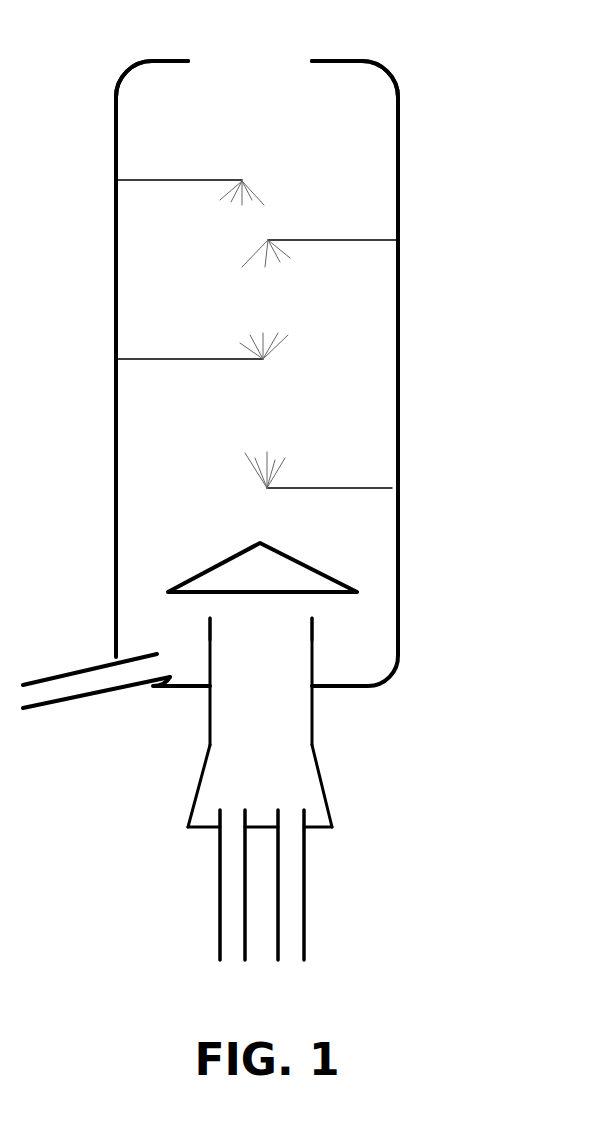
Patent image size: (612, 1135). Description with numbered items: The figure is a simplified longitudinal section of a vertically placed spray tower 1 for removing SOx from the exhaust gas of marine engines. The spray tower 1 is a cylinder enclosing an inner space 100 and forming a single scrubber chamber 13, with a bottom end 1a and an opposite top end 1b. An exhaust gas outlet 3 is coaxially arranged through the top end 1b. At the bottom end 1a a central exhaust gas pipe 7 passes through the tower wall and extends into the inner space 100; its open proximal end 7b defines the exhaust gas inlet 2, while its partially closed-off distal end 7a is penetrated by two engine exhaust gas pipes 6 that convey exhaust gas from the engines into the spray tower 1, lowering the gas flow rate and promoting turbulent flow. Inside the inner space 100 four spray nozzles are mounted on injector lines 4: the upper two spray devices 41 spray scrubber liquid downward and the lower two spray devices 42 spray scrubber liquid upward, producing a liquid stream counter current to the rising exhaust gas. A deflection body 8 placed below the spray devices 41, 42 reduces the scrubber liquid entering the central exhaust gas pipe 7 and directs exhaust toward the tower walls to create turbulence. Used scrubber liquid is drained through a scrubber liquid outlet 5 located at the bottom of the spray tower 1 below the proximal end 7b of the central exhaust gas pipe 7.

The spray tower 1 is at (98, 119).
The bottom end 1a is at (335, 688).
The top end 1b is at (330, 58).
The exhaust gas inlet 2 is at (261, 681).
The exhaust gas outlet 3 is at (250, 52).
The injector line 4 is at (150, 180).
The scrubber liquid outlet 5 is at (68, 685).
The engine exhaust gas pipe 6 is at (232, 883).
The central exhaust gas pipe 7 is at (300, 783).
The distal end 7a is at (313, 827).
The proximal end 7b is at (283, 625).
The deflection body 8 is at (235, 578).
The scrubber chamber 13 is at (365, 348).
The spray device 41 is at (242, 181).
The spray device 42 is at (263, 359).
The inner space 100 is at (378, 404).